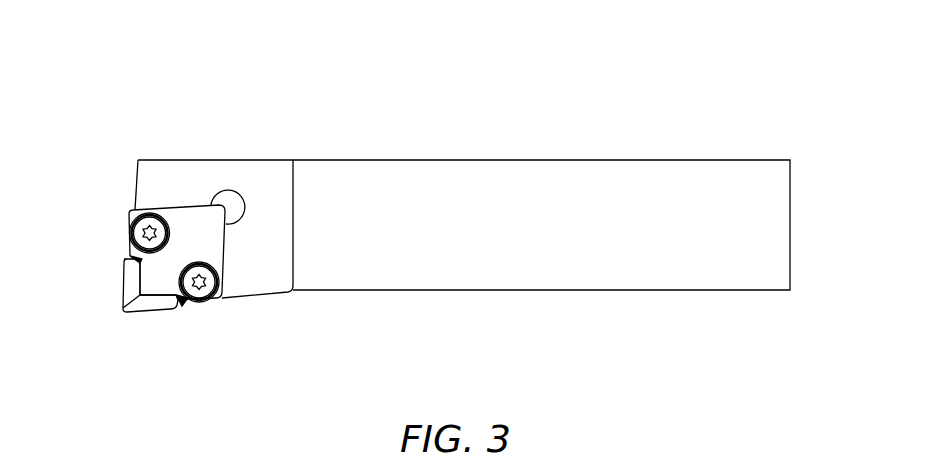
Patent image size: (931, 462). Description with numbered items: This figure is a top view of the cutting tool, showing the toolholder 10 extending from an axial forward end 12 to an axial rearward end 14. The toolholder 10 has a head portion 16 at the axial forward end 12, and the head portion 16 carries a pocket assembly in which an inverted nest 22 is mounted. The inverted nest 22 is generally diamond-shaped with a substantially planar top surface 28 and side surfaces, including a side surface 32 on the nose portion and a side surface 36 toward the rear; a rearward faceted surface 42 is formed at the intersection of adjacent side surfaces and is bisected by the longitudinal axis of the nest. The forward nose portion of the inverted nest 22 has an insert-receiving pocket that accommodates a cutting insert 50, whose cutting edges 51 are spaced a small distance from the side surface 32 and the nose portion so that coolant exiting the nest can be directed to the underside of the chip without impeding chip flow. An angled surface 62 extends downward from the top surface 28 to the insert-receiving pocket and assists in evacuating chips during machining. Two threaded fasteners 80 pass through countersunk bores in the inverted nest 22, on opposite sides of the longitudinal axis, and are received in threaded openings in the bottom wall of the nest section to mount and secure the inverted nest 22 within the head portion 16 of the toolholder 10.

The toolholder 10 is at (558, 66).
The axial forward end 12 is at (95, 240).
The axial rearward end 14 is at (818, 182).
The head portion 16 is at (178, 178).
The inverted nest 22 is at (213, 308).
The top surface 28 is at (192, 218).
The side surface 32 is at (160, 205).
The side surface 36 is at (230, 262).
The rearward faceted surface 42 is at (237, 208).
The cutting insert 50 is at (113, 308).
The cutting edges 51 is at (122, 287).
The angled surface 62 is at (135, 270).
The threaded fastener 80 is at (136, 223).